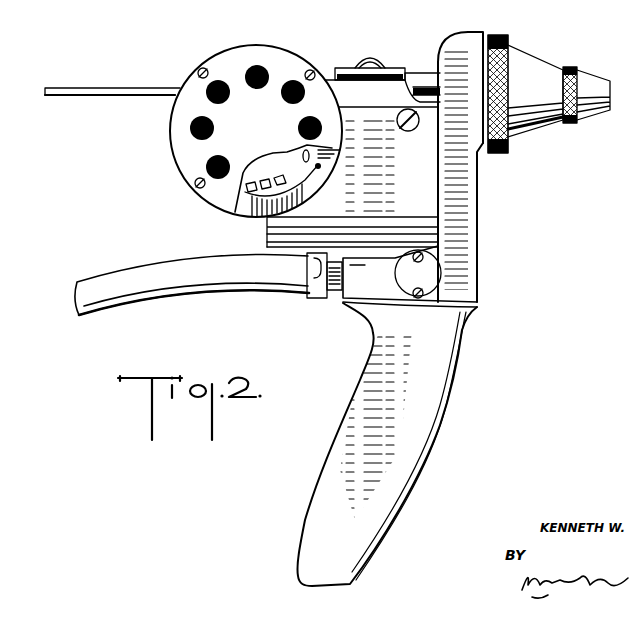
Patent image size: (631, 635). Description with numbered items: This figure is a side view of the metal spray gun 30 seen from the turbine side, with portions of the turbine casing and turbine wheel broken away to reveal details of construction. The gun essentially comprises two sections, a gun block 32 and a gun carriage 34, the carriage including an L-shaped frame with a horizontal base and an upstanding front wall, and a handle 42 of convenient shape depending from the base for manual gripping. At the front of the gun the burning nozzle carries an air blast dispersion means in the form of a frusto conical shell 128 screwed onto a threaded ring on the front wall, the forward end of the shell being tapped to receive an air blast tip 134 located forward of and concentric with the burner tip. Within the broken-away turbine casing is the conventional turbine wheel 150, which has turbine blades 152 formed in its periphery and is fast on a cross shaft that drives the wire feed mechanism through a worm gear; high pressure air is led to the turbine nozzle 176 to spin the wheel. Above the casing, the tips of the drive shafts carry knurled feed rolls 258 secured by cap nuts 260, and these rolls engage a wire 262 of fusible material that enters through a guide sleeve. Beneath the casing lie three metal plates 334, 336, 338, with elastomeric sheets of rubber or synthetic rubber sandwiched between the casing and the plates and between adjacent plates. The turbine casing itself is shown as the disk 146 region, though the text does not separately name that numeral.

The metal spray gun 30 is at (486, 239).
The gun block 32 is at (426, 194).
The gun carriage 34 is at (487, 272).
The handle 42 is at (427, 424).
The frusto conical shell 128 is at (531, 72).
The air blast tip 134 is at (600, 83).
The selector disk 146 is at (292, 44).
The turbine wheel 150 is at (268, 163).
The turbine blades 152 is at (234, 200).
The turbine nozzle 176 is at (313, 152).
The knurled feed rolls 258 is at (398, 68).
The cap nuts 260 is at (386, 40).
The wire 262 is at (126, 95).
The metal plate 334 is at (372, 216).
The metal plate 336 is at (403, 236).
The metal plate 338 is at (297, 242).